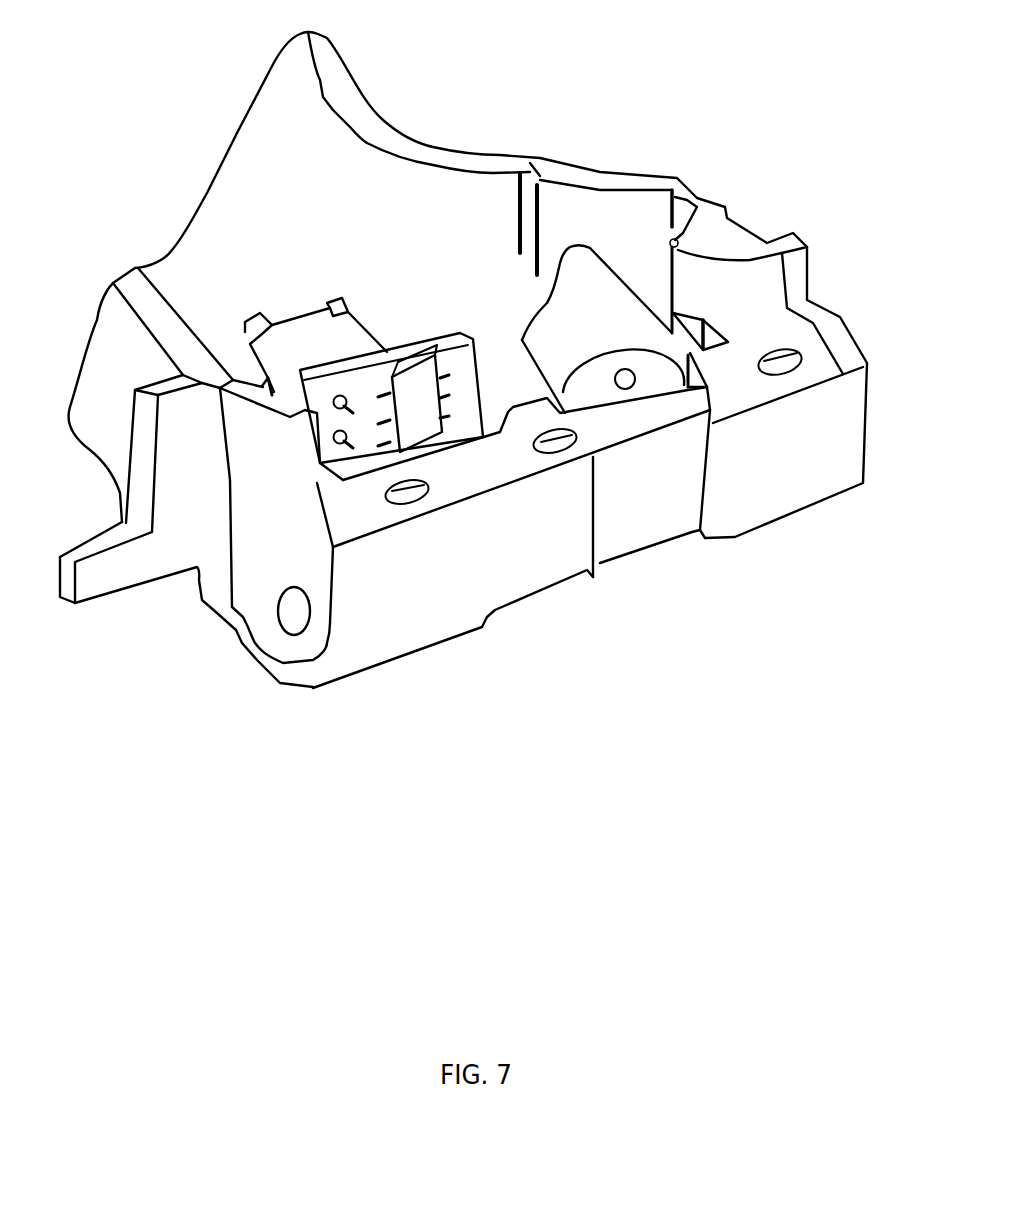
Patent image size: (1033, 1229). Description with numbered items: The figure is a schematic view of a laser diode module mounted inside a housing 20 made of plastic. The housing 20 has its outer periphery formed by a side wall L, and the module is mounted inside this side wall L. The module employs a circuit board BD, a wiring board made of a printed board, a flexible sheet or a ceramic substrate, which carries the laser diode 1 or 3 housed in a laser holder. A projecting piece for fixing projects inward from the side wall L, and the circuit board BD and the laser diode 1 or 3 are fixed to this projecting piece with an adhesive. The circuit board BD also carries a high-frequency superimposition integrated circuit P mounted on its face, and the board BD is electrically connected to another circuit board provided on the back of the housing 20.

The laser diode (LD) 1 is at (438, 214).
The laser diode (LD) 3 is at (332, 338).
The circuit board BD is at (503, 459).
The high-frequency superimposition integrated circuit P is at (503, 576).
The housing 20 is at (610, 583).
The side wall L is at (768, 510).